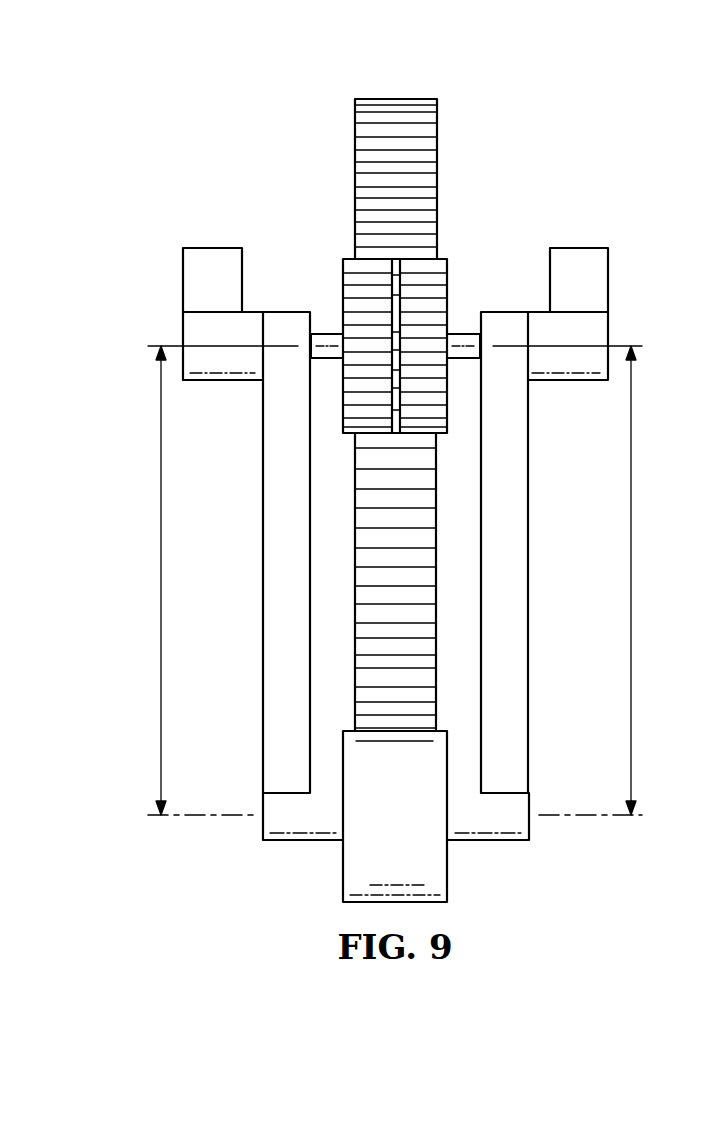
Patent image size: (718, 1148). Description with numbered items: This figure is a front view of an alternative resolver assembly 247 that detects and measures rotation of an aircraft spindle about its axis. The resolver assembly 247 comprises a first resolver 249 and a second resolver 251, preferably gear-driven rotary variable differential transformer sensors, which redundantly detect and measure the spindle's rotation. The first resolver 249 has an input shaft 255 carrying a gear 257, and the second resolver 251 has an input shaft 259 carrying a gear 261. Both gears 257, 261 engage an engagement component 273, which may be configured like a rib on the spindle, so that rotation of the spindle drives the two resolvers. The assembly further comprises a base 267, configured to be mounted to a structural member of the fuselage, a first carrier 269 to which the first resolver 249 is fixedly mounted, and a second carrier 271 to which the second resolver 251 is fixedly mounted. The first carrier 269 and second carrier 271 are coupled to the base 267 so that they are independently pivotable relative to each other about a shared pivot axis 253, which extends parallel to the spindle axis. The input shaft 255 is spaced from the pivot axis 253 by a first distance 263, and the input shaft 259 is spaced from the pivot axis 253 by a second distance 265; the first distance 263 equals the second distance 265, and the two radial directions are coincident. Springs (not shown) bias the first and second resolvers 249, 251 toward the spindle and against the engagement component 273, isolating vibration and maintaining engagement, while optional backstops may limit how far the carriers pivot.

The resolver assembly 247 is at (447, 878).
The first resolver 249 is at (212, 248).
The second resolver 251 is at (578, 248).
The pivot axis 253 is at (558, 816).
The input shaft 255 is at (330, 332).
The gear 257 is at (344, 398).
The input shaft 259 is at (462, 332).
The gear 261 is at (447, 398).
The first distance 263 is at (160, 580).
The second distance 265 is at (632, 560).
The base 267 is at (343, 862).
The first carrier 269 is at (270, 656).
The second carrier 271 is at (520, 658).
The engagement component 273 is at (392, 99).